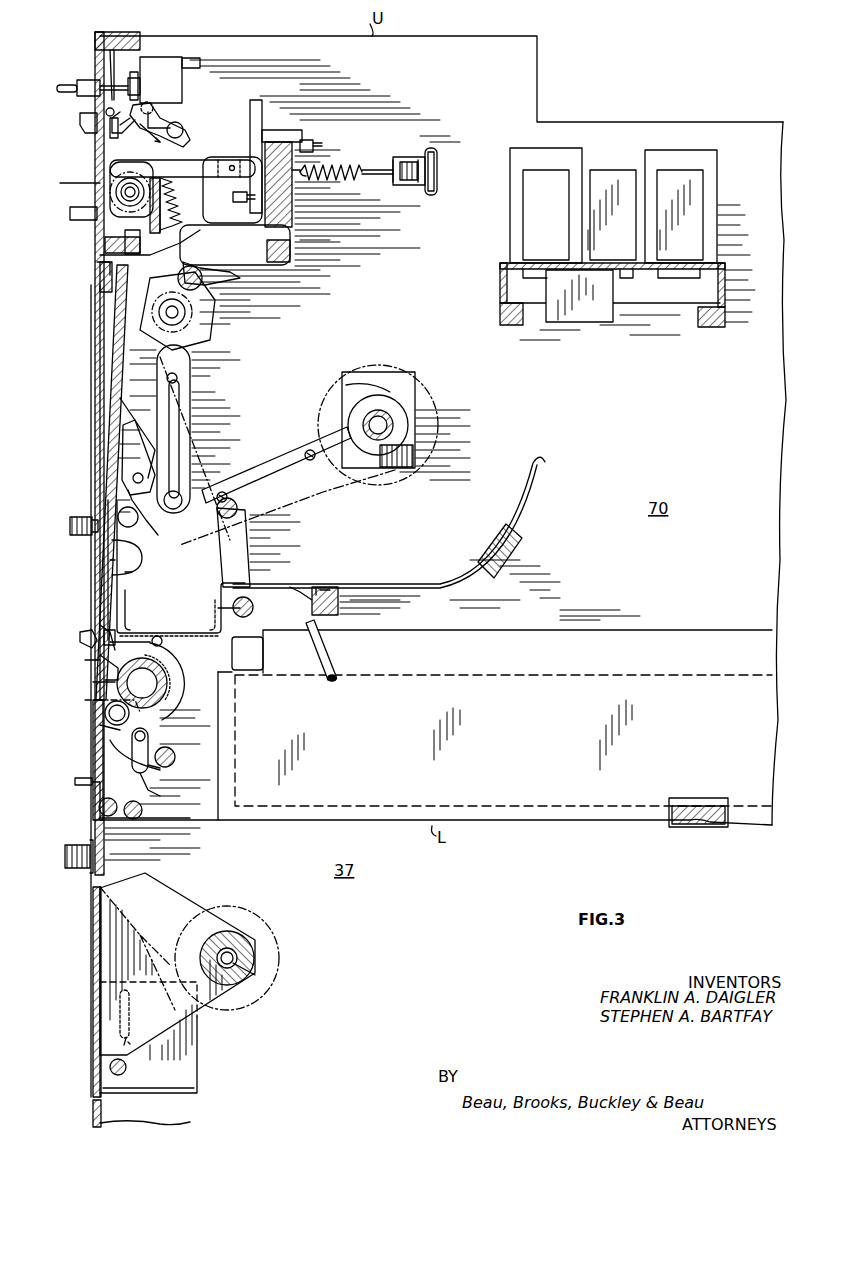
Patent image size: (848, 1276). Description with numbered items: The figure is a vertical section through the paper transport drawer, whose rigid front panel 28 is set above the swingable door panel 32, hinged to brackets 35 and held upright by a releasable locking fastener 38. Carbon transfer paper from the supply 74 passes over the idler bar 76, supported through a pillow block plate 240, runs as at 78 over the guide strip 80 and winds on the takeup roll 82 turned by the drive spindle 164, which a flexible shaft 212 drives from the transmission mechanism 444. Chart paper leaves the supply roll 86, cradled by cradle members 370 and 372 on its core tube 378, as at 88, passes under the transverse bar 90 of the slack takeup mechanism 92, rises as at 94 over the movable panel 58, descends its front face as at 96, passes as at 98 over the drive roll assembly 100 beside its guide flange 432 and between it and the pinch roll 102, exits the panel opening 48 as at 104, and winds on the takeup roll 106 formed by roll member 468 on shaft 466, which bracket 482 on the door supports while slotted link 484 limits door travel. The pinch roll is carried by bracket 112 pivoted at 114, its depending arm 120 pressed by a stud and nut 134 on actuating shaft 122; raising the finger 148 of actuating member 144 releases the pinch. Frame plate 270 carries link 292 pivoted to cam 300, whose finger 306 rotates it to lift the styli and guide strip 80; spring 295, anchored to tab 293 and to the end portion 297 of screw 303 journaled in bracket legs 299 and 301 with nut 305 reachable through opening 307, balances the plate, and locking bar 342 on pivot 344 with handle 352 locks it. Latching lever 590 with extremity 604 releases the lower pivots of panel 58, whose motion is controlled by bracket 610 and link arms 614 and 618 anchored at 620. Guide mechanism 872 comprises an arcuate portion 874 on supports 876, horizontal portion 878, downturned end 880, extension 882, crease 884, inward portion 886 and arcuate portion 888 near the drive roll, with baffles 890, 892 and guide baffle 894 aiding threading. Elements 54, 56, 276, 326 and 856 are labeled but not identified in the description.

The rigid front panel 28 is at (80, 662).
The swingable front panel member 32 is at (84, 977).
The bracket 35 is at (190, 1052).
The releasable locking fastener 38 is at (78, 868).
The panel opening 48 is at (90, 680).
The latch arm 54 is at (100, 628).
The pivot block 56 is at (86, 264).
The movable panel 58 is at (138, 371).
The supply of carbon transfer paper 74 is at (195, 338).
The idler bar 76 is at (200, 318).
The transfer paper run 78 is at (160, 232).
The guide strip 80 is at (100, 240).
The takeup roll 82 is at (136, 152).
The supply roll 86 is at (446, 428).
The chart paper issue run 88 is at (322, 515).
The horizontal transverse bar 90 is at (240, 496).
The slack takeup mechanism 92 is at (250, 556).
The upward chart paper run 94 is at (190, 392).
The downward chart paper run 96 is at (112, 362).
The chart paper run over drive roll 98 is at (130, 594).
The drive roll assembly 100 is at (160, 668).
The pinch roll 102 is at (102, 726).
The outward chart paper run 104 is at (86, 702).
The takeup roll 106 is at (288, 943).
The bracket member 112 is at (150, 734).
The pivot 114 is at (115, 750).
The depending arm portion 120 is at (162, 794).
The actuating shaft 122 is at (176, 754).
The nut member 134 is at (162, 772).
The actuating member 144 is at (77, 796).
The finger 148 is at (76, 781).
The drive spindle 164 is at (125, 192).
The flexible shaft 212 is at (326, 656).
The pillow block plate 240 is at (225, 303).
The frame plate 270 is at (306, 213).
The housing 276 is at (244, 248).
The link 292 is at (192, 167).
The tab 293 is at (300, 172).
The spring 295 is at (340, 170).
The projecting end portion 297 is at (380, 170).
The bracket leg 299 is at (394, 183).
The actuating cam member 300 is at (112, 168).
The bracket leg 301 is at (420, 185).
The screw 303 is at (412, 162).
The nut 305 is at (436, 160).
The opening 307 is at (436, 185).
The protruding finger 306 is at (78, 220).
The worm gear 326 is at (160, 192).
The locking bar 342 is at (192, 135).
The pivot member 344 is at (170, 128).
The manually operable portion 352 is at (82, 125).
The cradle member 370 is at (387, 367).
The cradle member 372 is at (400, 408).
The central tube member 378 is at (393, 432).
The flange member 432 is at (186, 684).
The transmission mechanism 444 is at (641, 624).
The takeup roll shaft 466 is at (260, 963).
The takeup roll member 468 is at (245, 942).
The bracket 482 is at (185, 895).
The slotted link 484 is at (126, 1065).
The latching lever 590 is at (158, 638).
The forward extremity 604 is at (80, 636).
The bracket 610 is at (200, 520).
The link arm 614 is at (146, 428).
The link arm 618 is at (178, 430).
The anchor pivot 620 is at (190, 490).
The shaft 856 is at (97, 200).
The guide mechanism 872 is at (405, 576).
The arcuate portion 874 is at (465, 572).
The support member 876 is at (340, 612).
The horizontally extending portion 878 is at (290, 584).
The downturned end portion 880 is at (222, 585).
The extension portion 882 is at (258, 640).
The crease 884 is at (128, 574).
The downwardly and inwardly extending portion 886 is at (150, 622).
The arcuate portion 888 is at (190, 706).
The deflector baffle 890 is at (108, 600).
The deflector baffle 892 is at (105, 670).
The guide baffle 894 is at (108, 712).